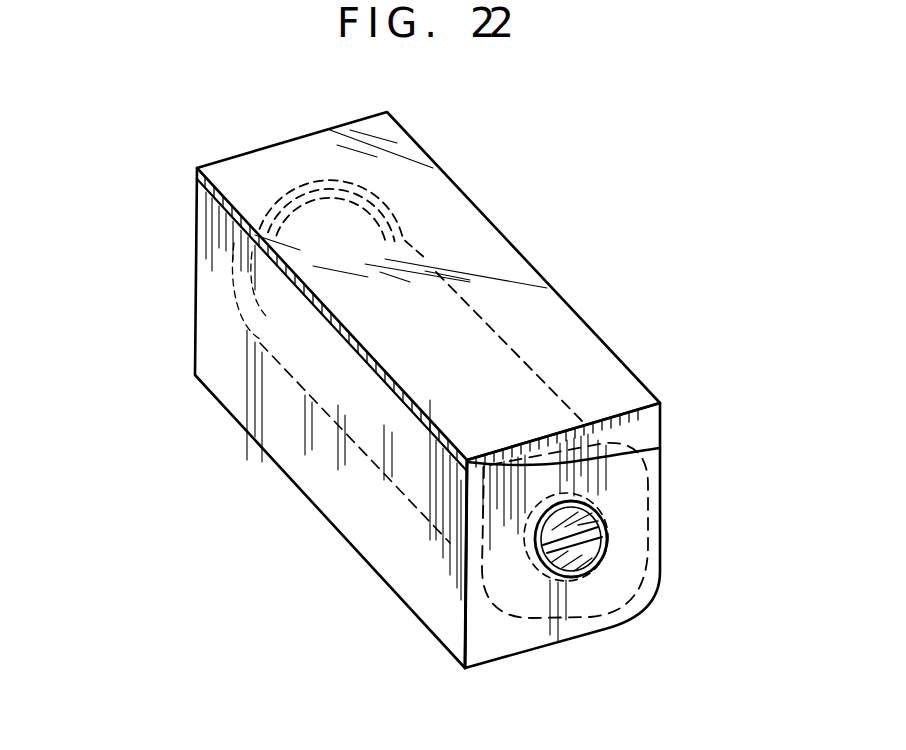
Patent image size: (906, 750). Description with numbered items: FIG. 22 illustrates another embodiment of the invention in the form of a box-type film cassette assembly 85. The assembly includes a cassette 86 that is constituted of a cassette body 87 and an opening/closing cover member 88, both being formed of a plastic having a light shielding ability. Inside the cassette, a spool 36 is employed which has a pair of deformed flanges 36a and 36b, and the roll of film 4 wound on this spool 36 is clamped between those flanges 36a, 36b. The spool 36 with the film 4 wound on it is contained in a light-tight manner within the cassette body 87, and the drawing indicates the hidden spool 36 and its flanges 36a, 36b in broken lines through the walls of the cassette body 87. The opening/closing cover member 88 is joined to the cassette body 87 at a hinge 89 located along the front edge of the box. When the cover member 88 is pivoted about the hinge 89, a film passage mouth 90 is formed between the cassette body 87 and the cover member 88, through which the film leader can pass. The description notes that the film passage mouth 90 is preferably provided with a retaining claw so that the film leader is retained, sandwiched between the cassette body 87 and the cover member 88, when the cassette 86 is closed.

The box-type film cassette assembly 85 is at (163, 222).
The cassette 86 is at (283, 510).
The cassette body 87 is at (611, 628).
The opening/closing cover member 88 is at (591, 332).
The hinge 89 is at (469, 460).
The film passage mouth 90 is at (660, 448).
The spool 36 is at (646, 589).
The deformed flange 36a is at (300, 184).
The deformed flange 36b is at (663, 530).
The film 4 is at (424, 257).